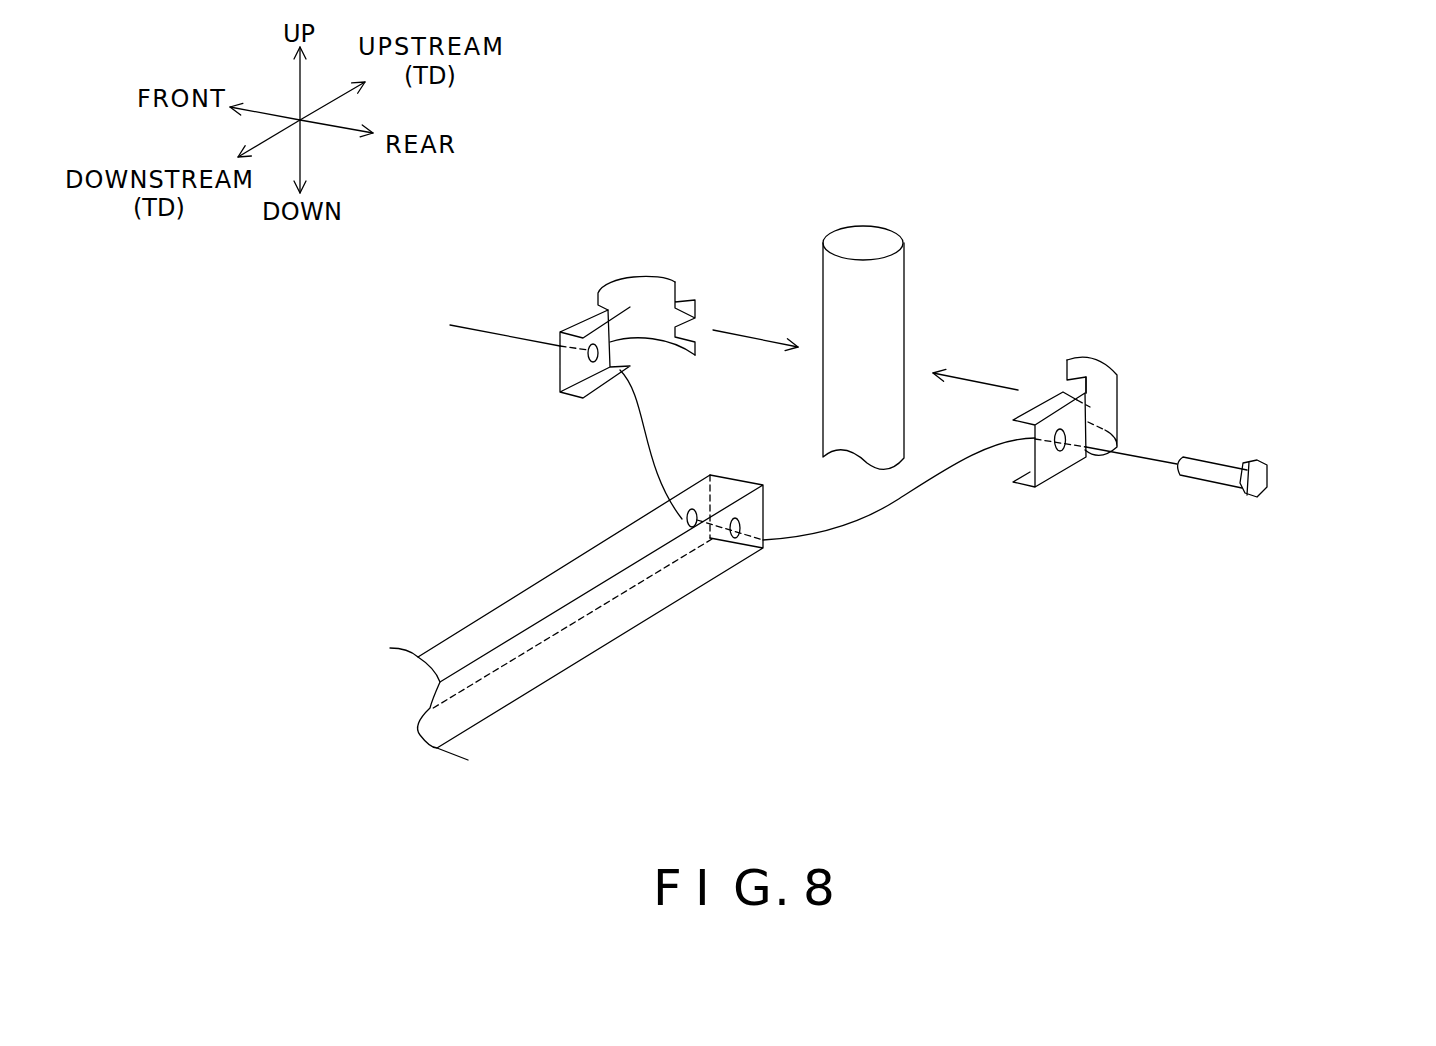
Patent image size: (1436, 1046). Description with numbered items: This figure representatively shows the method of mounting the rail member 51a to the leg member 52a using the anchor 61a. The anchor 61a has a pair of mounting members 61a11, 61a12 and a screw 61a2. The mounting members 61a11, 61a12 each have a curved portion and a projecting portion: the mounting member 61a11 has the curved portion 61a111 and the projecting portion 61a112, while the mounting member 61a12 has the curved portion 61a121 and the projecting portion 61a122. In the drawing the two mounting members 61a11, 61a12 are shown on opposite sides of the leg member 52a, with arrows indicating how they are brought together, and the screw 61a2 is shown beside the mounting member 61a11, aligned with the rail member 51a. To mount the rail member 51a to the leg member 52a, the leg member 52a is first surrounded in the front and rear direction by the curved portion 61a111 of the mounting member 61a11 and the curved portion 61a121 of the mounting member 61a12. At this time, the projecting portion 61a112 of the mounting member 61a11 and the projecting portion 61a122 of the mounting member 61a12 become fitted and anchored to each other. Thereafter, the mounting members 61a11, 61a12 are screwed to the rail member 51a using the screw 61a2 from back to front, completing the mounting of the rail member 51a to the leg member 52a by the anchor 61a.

The rail member 51a is at (602, 647).
The leg member 52a is at (904, 283).
The anchor 61a is at (1222, 373).
The mounting member 61a11 is at (1181, 375).
The curved portion 61a111 is at (1181, 359).
The projecting portion 61a112 is at (1077, 360).
The mounting member 61a12 is at (669, 250).
The curved portion 61a121 is at (743, 228).
The projecting portion 61a122 is at (687, 305).
The screw 61a2 is at (1268, 475).